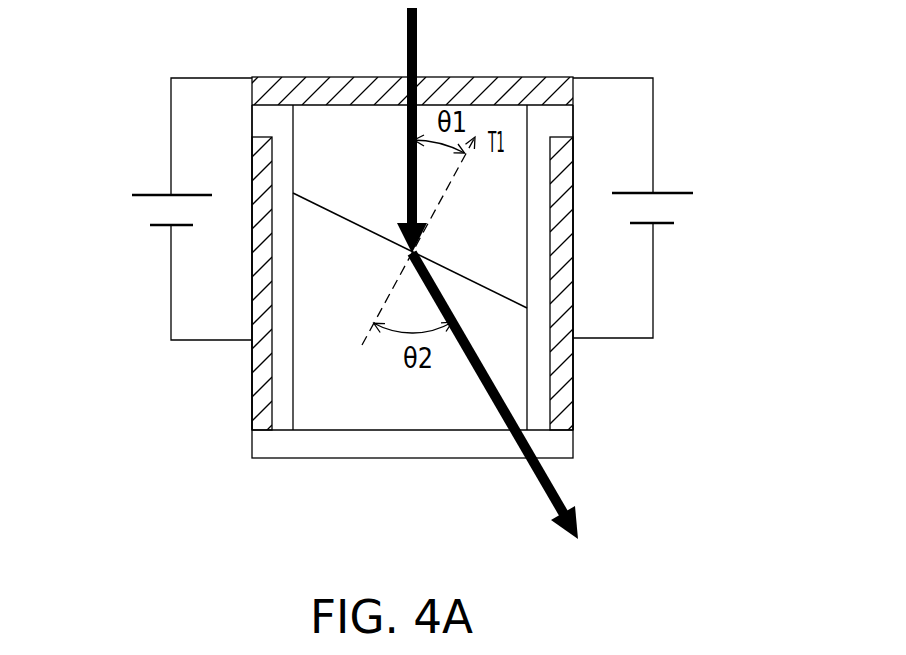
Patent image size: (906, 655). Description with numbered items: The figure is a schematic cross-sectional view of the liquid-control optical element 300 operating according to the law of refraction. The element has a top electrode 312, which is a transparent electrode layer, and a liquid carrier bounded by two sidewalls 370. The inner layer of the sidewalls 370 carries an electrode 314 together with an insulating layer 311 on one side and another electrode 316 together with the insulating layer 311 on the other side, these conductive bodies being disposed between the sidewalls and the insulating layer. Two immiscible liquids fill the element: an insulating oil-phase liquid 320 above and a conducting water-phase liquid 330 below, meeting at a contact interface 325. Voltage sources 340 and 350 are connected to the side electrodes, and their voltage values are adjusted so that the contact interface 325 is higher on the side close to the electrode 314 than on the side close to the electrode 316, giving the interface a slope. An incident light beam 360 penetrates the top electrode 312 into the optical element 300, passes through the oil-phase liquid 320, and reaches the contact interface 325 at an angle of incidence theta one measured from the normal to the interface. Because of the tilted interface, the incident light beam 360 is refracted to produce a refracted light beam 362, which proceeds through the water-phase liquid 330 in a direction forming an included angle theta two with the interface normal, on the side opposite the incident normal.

The liquid-control optical element 300 is at (716, 517).
The insulating layer 311 is at (556, 122).
The top electrode 312 is at (295, 88).
The electrode 314 is at (262, 393).
The electrode 316 is at (560, 388).
The oil-phase liquid 320 is at (355, 147).
The contact interface 325 is at (490, 287).
The water-phase liquid 330 is at (355, 413).
The voltage source 340 is at (140, 172).
The voltage source 350 is at (685, 170).
The incident light beam 360 is at (407, 67).
The refracted light beam 362 is at (489, 388).
The sidewalls 370 is at (250, 367).